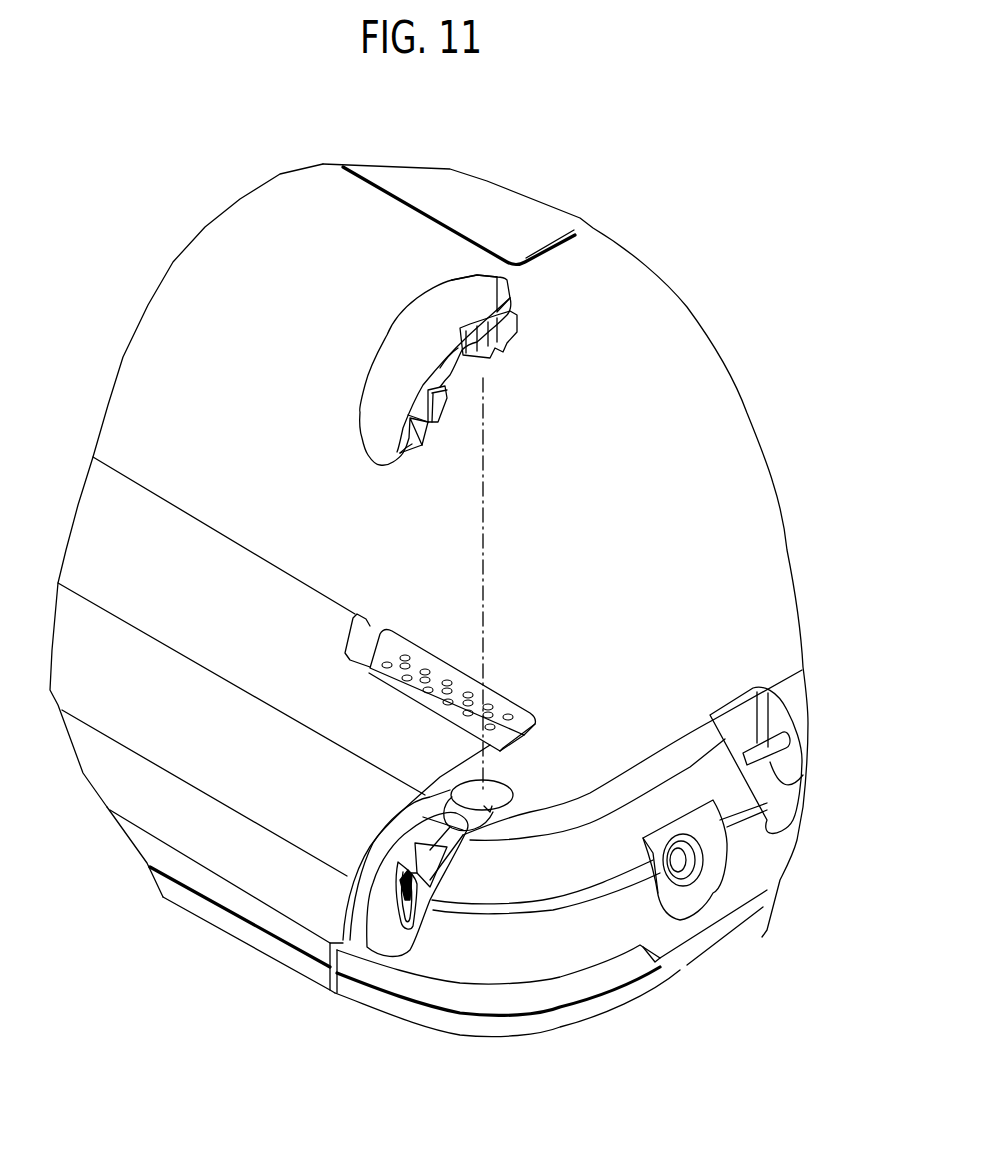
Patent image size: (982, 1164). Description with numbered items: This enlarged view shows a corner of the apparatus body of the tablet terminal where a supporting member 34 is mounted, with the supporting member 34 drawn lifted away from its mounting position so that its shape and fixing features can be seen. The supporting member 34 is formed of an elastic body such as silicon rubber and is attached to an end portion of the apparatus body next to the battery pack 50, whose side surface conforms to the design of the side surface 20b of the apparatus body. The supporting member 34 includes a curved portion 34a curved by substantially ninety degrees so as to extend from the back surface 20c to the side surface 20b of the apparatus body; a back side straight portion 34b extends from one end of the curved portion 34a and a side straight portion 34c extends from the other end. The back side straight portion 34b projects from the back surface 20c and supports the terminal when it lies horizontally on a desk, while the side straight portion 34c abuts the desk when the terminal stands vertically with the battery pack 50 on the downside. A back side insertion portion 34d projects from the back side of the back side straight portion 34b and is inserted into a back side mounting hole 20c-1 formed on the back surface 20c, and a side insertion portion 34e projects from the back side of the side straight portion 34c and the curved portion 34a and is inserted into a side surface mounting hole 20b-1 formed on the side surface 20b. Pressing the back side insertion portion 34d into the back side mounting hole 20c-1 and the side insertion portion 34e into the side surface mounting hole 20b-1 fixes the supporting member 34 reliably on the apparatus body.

The supporting member 34 is at (486, 323).
The curved portion 34a is at (442, 368).
The back side straight portion 34b is at (488, 285).
The side straight portion 34c is at (410, 445).
The back side insertion portion 34d is at (510, 332).
The side insertion portion 34e is at (441, 404).
The back surface 20c is at (745, 540).
The back side mounting hole 20c-1 is at (492, 800).
The side surface 20b is at (455, 962).
The side surface mounting hole 20b-1 is at (425, 955).
The battery pack 50 is at (191, 801).